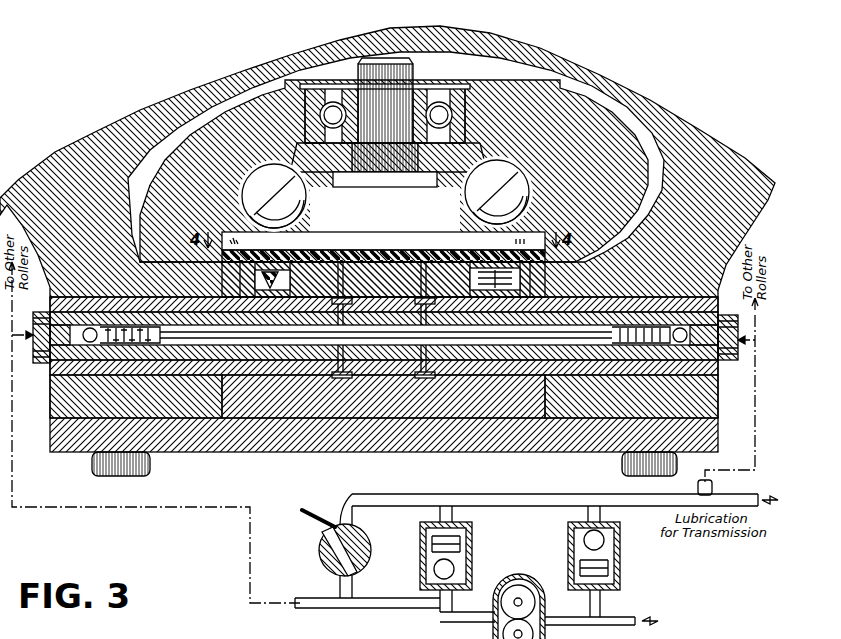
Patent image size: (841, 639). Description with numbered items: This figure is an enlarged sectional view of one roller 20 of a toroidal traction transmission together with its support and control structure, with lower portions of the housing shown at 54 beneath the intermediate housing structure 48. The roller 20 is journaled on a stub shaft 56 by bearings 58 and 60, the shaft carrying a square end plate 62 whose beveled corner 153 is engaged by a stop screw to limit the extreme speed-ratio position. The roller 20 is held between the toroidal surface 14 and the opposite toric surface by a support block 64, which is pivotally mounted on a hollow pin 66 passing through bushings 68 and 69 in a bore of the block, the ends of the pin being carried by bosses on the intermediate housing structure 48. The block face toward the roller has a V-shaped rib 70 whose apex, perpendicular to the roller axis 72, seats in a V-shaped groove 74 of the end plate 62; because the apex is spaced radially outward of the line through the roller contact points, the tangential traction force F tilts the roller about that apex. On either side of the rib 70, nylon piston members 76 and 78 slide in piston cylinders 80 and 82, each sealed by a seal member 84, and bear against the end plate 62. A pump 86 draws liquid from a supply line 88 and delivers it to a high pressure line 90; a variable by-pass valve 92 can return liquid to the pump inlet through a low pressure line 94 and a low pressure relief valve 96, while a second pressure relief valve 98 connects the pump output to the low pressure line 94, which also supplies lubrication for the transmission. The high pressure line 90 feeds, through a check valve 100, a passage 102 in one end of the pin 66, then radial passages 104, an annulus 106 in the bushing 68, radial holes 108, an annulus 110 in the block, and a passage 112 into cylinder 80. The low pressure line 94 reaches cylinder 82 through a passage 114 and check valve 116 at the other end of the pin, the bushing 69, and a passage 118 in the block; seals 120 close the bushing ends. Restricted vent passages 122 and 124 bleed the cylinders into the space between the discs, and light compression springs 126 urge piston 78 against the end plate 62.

The toroidal surface 14 is at (620, 157).
The roller 20 is at (652, 110).
The intermediate housing structure 48 is at (718, 418).
The mounting foot 54 is at (265, 455).
The stub shaft 56 is at (358, 74).
The bearing 58 is at (440, 102).
The bearing 60 is at (512, 172).
The end plate 62 is at (242, 212).
The support block 64 is at (550, 393).
The hollow pin 66 is at (645, 367).
The bushing 68 is at (258, 311).
The bushing 69 is at (480, 326).
The V-shaped rib 70 is at (395, 256).
The axis 72 is at (385, 100).
The V-shaped groove 74 is at (383, 256).
The piston member 76 is at (344, 256).
The piston member 78 is at (428, 255).
The piston cylinder 80 is at (325, 257).
The piston cylinder 82 is at (440, 256).
The seal member 84 is at (377, 242).
The pump 86 is at (535, 598).
The supply line 88 is at (628, 616).
The high pressure line 90 is at (318, 600).
The variable by-pass valve 92 is at (362, 552).
The low pressure line 94 is at (528, 500).
The low pressure relief valve 96 is at (606, 545).
The second pressure relief valve 98 is at (440, 570).
The check valve 100 is at (90, 343).
The passage 102 is at (175, 340).
The radial passage 104 is at (345, 345).
The annulus 106 is at (332, 348).
The radial hole 108 is at (318, 372).
The annulus 110 is at (340, 376).
The passage 112 is at (345, 283).
The passage 114 is at (505, 348).
The check valve 116 is at (678, 325).
The passage 118 is at (428, 283).
The seal 120 is at (576, 270).
The restricted vent passage 122 is at (268, 280).
The restricted vent passage 124 is at (522, 284).
The light compression spring 126 is at (455, 242).
The beveled corner 153 is at (548, 230).
The tangential traction force F is at (378, 183).